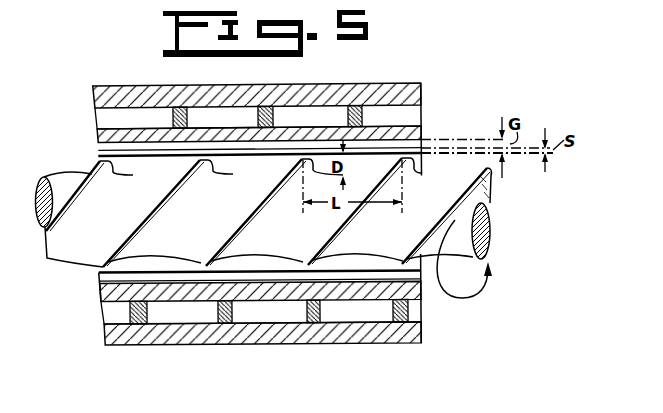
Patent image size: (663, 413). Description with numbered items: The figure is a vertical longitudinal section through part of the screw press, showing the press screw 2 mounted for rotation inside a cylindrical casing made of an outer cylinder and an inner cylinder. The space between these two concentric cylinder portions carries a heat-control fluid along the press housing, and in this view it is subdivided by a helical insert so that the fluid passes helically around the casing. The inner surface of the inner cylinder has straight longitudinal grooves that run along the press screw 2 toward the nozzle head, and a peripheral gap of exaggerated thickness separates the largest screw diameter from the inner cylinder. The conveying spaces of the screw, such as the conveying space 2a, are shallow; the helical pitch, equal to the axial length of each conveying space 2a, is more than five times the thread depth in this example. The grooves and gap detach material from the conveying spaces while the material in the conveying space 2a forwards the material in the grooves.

The press screw 2 is at (53, 248).
The conveying space 2a is at (233, 175).